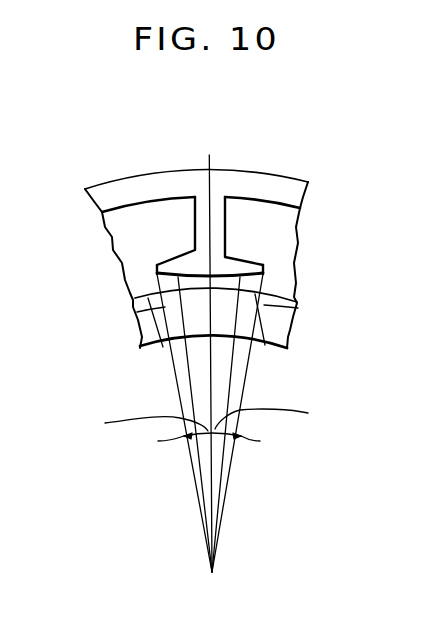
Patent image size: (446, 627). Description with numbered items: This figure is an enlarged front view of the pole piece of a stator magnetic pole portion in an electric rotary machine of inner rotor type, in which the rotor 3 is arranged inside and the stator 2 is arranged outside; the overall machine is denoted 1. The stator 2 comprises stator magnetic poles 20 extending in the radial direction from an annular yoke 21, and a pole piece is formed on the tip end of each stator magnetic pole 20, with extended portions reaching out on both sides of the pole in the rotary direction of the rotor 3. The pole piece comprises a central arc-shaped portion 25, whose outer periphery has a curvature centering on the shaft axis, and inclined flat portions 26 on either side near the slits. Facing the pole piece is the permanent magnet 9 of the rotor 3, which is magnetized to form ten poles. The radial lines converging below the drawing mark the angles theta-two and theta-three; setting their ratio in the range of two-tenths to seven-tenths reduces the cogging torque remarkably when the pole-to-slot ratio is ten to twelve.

The stator 1 is at (217, 134).
The stator 2 is at (355, 214).
The rotor 3 is at (333, 392).
The permanent magnet 9 is at (183, 336).
The stator magnetic pole 20 is at (227, 222).
The annular yoke 21 is at (277, 174).
The central arc-shaped portion 25 is at (198, 278).
The inclined flat portion 26 is at (158, 279).